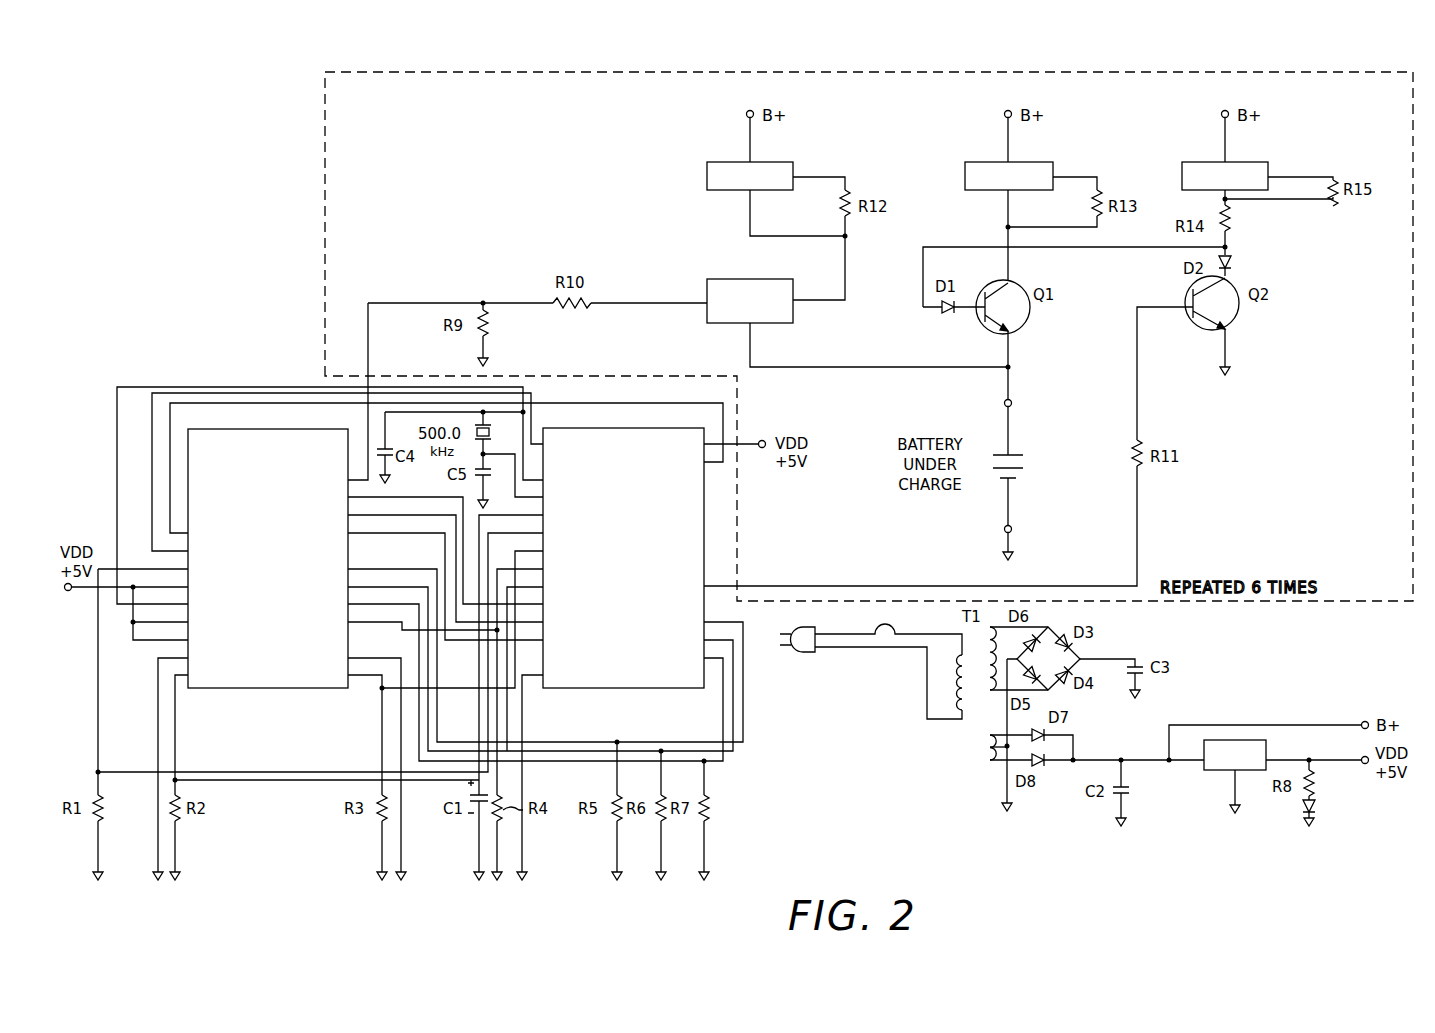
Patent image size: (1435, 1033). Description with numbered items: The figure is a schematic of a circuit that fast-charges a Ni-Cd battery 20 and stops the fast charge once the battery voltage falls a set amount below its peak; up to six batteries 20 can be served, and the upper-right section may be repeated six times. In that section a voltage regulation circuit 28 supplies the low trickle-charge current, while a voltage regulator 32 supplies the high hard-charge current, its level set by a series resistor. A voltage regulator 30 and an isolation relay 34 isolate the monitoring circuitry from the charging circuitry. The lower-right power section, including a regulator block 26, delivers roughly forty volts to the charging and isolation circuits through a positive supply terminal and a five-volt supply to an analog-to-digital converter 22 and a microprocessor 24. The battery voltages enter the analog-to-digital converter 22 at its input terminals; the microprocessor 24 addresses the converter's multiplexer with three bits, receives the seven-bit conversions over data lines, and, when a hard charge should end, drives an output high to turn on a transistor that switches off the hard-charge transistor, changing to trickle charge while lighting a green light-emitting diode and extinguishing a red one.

The battery 20 is at (1015, 458).
The analog-to-digital converter 22 is at (216, 690).
The microprocessor 24 is at (573, 690).
The voltage regulator 26 is at (1266, 748).
The voltage regulation circuit 28 is at (1255, 162).
The voltage regulator 30 is at (776, 162).
The voltage regulator 32 is at (1036, 162).
The isolation relay 34 is at (776, 323).